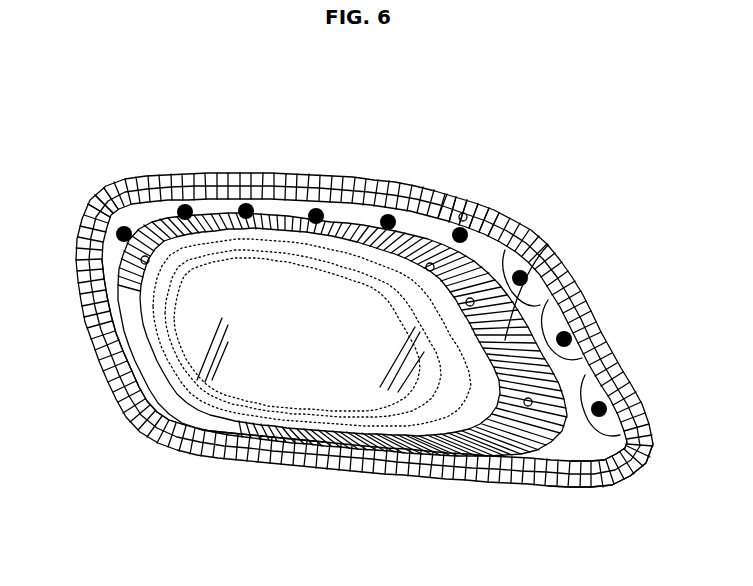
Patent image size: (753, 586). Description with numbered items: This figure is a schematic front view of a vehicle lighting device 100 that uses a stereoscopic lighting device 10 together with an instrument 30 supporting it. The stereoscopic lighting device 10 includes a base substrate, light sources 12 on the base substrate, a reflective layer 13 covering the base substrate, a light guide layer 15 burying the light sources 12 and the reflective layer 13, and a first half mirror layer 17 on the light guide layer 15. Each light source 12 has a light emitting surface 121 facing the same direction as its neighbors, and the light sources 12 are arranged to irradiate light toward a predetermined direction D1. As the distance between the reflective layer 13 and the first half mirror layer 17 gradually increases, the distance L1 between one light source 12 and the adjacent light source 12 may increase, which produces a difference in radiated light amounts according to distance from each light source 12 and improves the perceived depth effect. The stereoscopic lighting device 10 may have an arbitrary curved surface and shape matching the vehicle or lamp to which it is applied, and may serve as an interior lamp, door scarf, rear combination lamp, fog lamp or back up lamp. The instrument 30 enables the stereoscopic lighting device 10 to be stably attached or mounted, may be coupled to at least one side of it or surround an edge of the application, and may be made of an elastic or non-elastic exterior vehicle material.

The frame assembly 100 is at (108, 119).
The stereoscopic lighting device 10 is at (350, 205).
The light source 12 is at (478, 192).
The light emitting surface 121 is at (430, 263).
The reflective layer 13 is at (560, 445).
The light guide layer 15 is at (597, 473).
The first half mirror layer 17 is at (407, 385).
The instrument 30 is at (193, 450).
The predetermined direction D1 is at (195, 205).
The distance between light sources L1 is at (540, 262).